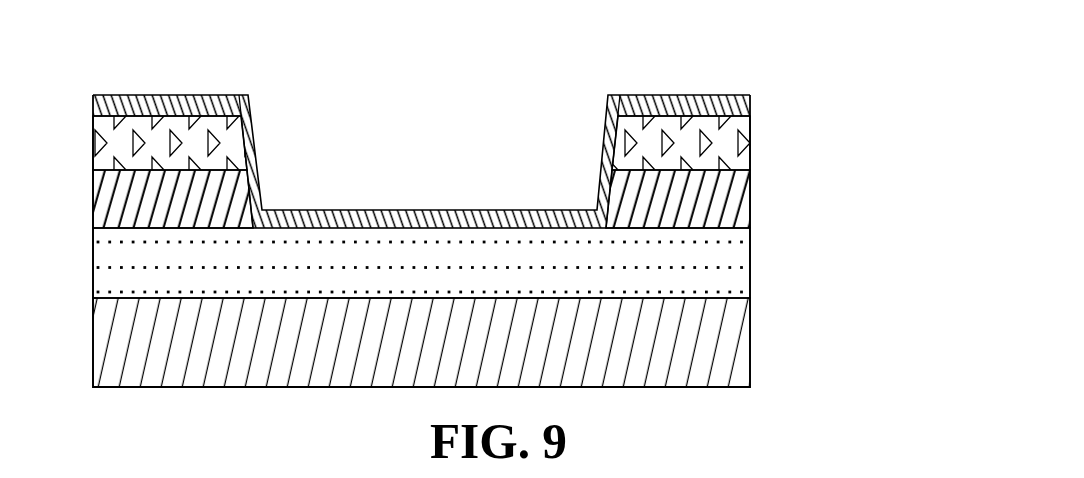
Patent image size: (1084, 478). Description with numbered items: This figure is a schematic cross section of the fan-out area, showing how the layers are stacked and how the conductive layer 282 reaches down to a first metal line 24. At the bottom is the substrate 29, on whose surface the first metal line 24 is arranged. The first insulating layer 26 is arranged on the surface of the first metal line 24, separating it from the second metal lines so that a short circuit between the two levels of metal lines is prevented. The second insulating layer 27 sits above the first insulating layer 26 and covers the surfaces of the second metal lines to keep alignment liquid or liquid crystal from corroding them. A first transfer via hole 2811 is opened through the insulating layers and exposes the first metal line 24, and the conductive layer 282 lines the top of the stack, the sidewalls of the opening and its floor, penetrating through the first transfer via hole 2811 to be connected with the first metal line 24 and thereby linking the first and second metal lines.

The first transfer via hole 2811 is at (475, 185).
The conductive layer 282 is at (680, 98).
The second insulating layer 27 is at (680, 130).
The first insulating layer 26 is at (690, 205).
The first metal line 24 is at (685, 268).
The substrate 29 is at (695, 352).